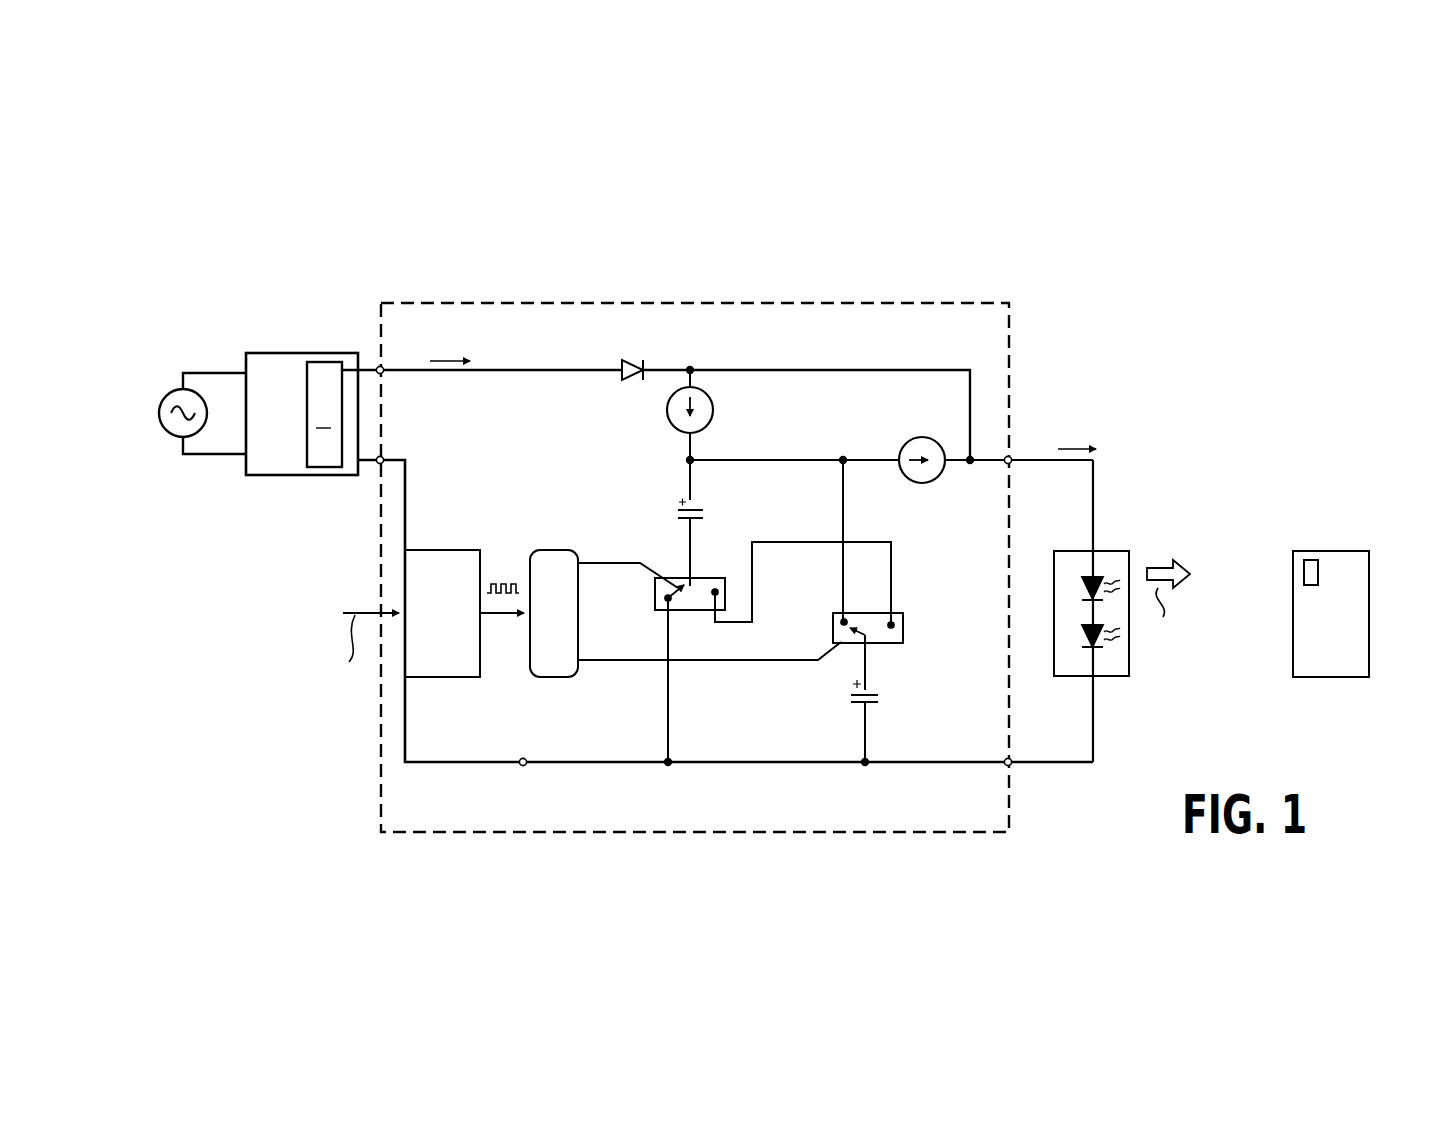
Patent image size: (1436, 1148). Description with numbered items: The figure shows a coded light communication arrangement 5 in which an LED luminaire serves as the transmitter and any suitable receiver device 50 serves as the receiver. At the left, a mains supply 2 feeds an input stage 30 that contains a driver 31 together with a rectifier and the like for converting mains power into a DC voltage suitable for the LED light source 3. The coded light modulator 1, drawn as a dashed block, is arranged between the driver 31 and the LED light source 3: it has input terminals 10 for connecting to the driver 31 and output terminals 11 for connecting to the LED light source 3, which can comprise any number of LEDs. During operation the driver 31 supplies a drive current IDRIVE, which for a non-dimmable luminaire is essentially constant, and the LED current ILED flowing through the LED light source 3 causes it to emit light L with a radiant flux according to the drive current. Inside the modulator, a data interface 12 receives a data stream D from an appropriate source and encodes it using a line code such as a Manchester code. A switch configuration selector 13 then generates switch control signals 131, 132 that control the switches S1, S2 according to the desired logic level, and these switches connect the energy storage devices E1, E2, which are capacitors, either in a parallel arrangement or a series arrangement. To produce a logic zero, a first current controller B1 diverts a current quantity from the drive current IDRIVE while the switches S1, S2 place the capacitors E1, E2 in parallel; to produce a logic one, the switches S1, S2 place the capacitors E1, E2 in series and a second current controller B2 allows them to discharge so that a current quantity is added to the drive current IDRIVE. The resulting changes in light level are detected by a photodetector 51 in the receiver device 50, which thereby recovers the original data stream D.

The coded light modulator 1 is at (870, 298).
The CL communication arrangement 5 is at (480, 256).
The mains / AC supply 2 is at (323, 416).
The input stage 30 is at (295, 353).
The driver 31 is at (322, 362).
The input terminals 10 is at (382, 372).
The output terminals 11 is at (1011, 458).
The data interface 12 is at (464, 613).
The switch configuration selector 13 is at (550, 678).
The switch control signal 131 is at (599, 563).
The switch control signal 132 is at (604, 660).
The LED light source 3 is at (1126, 551).
The receiver device 50 is at (1360, 551).
The photodetector 51 is at (1310, 560).
The first current controller B1 is at (713, 412).
The second current controller B2 is at (920, 437).
The energy storage device E1 is at (705, 513).
The energy storage device E2 is at (878, 698).
The switch S1 is at (726, 593).
The switch S2 is at (856, 613).
The data stream D is at (364, 650).
The drive current IDRIVE is at (456, 340).
The LED current ILED is at (1093, 431).
The light L is at (1211, 601).